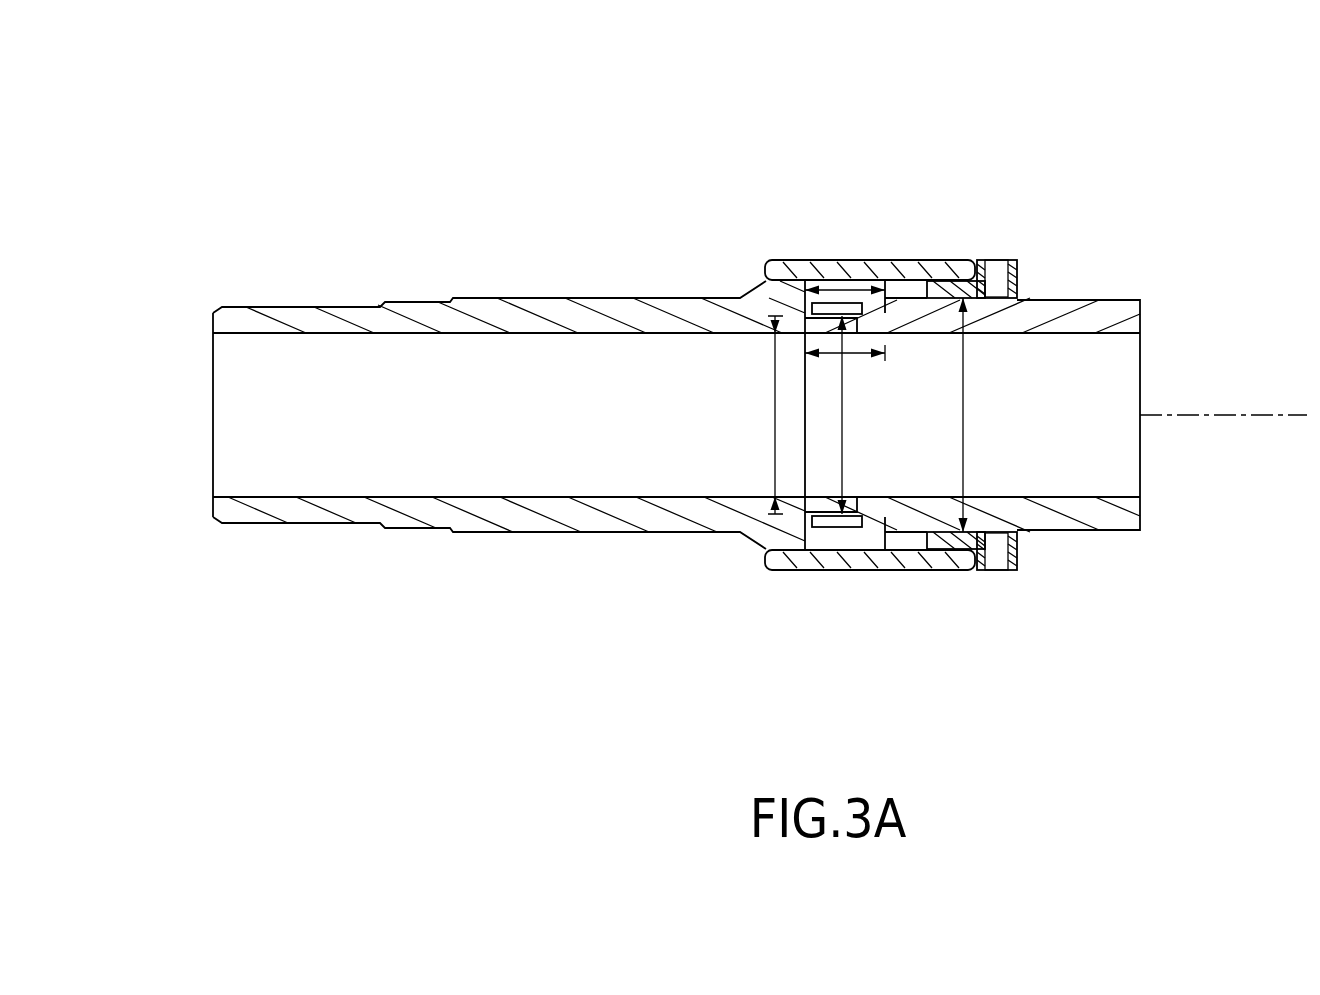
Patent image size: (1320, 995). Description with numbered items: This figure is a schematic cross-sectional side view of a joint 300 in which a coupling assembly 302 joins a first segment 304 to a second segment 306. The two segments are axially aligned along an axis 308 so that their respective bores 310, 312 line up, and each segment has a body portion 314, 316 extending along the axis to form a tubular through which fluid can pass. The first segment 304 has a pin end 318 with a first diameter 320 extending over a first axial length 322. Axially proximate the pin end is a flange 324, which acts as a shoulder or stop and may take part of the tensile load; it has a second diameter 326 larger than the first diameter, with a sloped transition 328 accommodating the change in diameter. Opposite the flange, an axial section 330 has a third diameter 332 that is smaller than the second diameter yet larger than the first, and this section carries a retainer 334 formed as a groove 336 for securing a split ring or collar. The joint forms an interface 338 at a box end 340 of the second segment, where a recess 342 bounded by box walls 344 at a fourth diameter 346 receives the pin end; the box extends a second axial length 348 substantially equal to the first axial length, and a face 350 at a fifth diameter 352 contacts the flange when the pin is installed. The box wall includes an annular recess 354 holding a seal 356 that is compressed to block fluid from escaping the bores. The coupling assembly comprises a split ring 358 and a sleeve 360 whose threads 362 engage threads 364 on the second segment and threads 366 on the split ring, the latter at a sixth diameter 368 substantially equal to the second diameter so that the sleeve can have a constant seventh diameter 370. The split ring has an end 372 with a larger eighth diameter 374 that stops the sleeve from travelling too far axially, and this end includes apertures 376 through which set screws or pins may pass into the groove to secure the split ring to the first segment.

The joint 300 is at (953, 122).
The coupling assembly 302 is at (966, 226).
The first segment 304 is at (1136, 534).
The second segment 306 is at (468, 537).
The axis 308 is at (1258, 413).
The bore of first segment 310 is at (1130, 337).
The bore of second segment 312 is at (222, 338).
The body portion of first segment 314 is at (1125, 310).
The body portion of second segment 316 is at (470, 298).
The pin end 318 is at (862, 259).
The first diameter 320 is at (839, 415).
The first axial length 322 is at (848, 355).
The flange 324 is at (945, 582).
The second diameter 326 is at (907, 582).
The transition 328 is at (788, 582).
The axial section 330 is at (1040, 254).
The third diameter 332 is at (962, 415).
The retainer 334 is at (1022, 284).
The groove 336 is at (1012, 534).
The interface 338 is at (767, 575).
The box end 340 is at (811, 223).
The recess 342 is at (862, 478).
The box walls 344 is at (812, 528).
The fourth diameter 346 is at (774, 415).
The second axial length 348 is at (828, 258).
The face 350 is at (860, 578).
The fifth diameter 352 is at (788, 260).
The annular recess 354 is at (819, 546).
The seal 356 is at (852, 308).
The split ring 358 is at (998, 586).
The sleeve 360 is at (870, 589).
The threads of sleeve 362 is at (903, 250).
The threads of second segment 364 is at (812, 303).
The threads of split ring 366 is at (968, 258).
The sixth diameter 368 is at (983, 601).
The seventh diameter 370 is at (843, 250).
The end of split ring 372 is at (1017, 562).
The eighth diameter 374 is at (1012, 246).
The apertures 376 is at (978, 302).